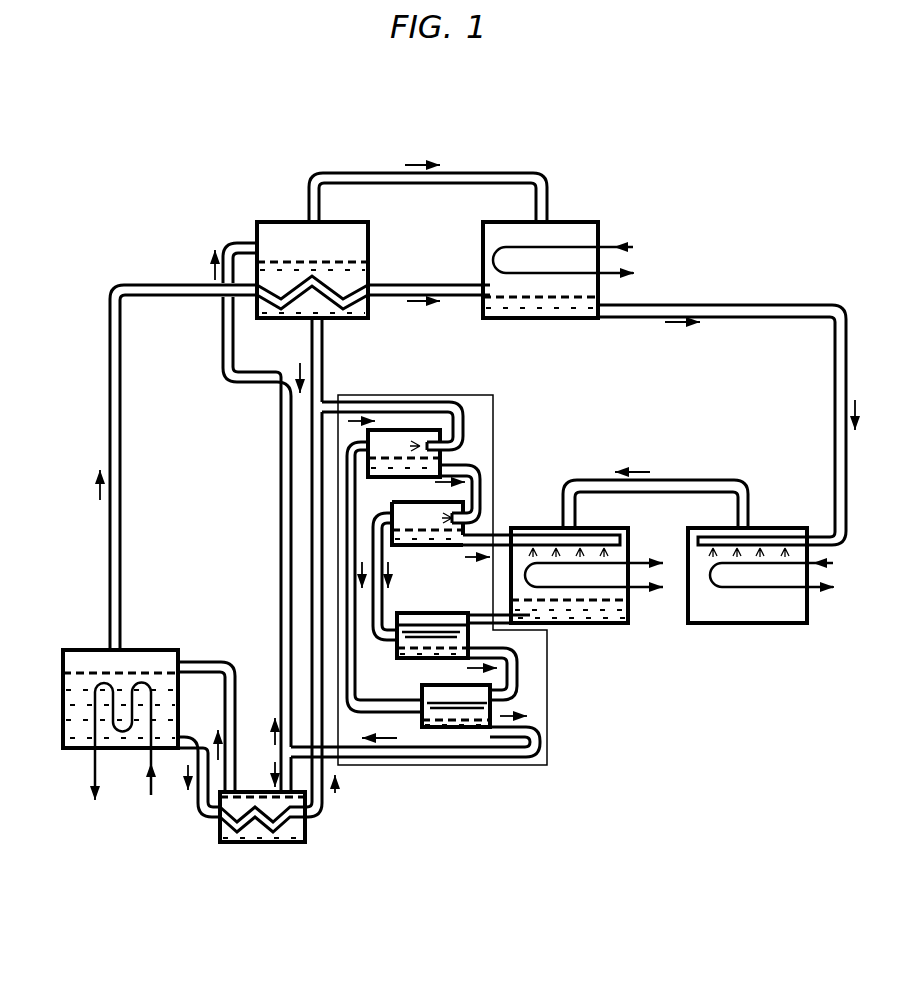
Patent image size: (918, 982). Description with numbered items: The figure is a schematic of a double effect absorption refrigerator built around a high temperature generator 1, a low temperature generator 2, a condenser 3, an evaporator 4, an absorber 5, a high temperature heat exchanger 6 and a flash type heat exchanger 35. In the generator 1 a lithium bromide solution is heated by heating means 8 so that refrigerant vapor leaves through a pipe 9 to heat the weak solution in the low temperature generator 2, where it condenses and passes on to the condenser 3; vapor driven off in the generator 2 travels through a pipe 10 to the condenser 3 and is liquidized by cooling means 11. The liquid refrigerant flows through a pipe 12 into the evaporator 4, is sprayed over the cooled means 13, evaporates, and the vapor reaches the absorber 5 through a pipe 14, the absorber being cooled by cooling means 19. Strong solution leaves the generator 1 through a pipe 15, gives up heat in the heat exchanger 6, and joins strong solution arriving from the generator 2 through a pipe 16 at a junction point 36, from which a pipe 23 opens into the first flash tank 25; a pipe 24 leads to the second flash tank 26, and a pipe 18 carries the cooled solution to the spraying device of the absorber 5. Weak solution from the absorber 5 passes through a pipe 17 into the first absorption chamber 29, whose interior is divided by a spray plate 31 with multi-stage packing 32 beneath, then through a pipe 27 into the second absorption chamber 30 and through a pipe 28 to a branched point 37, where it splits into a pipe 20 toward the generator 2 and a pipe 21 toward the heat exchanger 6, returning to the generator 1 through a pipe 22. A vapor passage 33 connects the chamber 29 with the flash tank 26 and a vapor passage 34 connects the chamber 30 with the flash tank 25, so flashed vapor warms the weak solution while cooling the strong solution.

The high temperature generator 1 is at (88, 650).
The low temperature generator 2 is at (264, 222).
The condenser 3 is at (580, 222).
The evaporator 4 is at (807, 606).
The absorber 5 is at (628, 604).
The high temperature heat exchanger 6 is at (220, 835).
The heating means 8 is at (90, 770).
The pipe 9 is at (108, 358).
The pipe 10 is at (480, 175).
The cooling means 11 is at (628, 247).
The pipe 12 is at (612, 318).
The cooled means 13 is at (836, 558).
The pipe 14 is at (594, 480).
The pipe 15 is at (196, 800).
The pipe 16 is at (322, 346).
The pipe 17 is at (500, 628).
The pipe 18 is at (496, 535).
The cooling means 19 is at (634, 563).
The pipe 20 is at (281, 425).
The pipe 21 is at (322, 800).
The pipe 22 is at (200, 662).
The pipe 23 is at (378, 402).
The pipe 24 is at (483, 475).
The first flash tank 25 is at (396, 482).
The second flash tank 26 is at (400, 545).
The pipe 27 is at (540, 690).
The pipe 28 is at (452, 758).
The first absorption chamber 29 is at (430, 613).
The second absorption chamber 30 is at (420, 728).
The spray plate 31 is at (440, 632).
The packing 32 is at (420, 655).
The vapor passage 33 is at (383, 586).
The vapor passage 34 is at (357, 684).
The flash type heat exchanger 35 is at (488, 374).
The junction point 36 is at (320, 402).
The branched point 37 is at (285, 752).